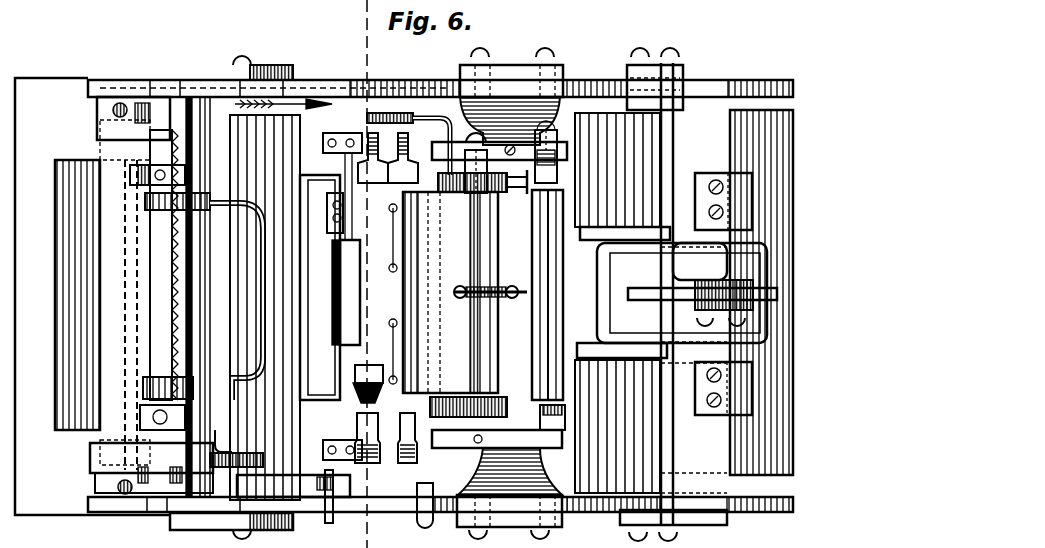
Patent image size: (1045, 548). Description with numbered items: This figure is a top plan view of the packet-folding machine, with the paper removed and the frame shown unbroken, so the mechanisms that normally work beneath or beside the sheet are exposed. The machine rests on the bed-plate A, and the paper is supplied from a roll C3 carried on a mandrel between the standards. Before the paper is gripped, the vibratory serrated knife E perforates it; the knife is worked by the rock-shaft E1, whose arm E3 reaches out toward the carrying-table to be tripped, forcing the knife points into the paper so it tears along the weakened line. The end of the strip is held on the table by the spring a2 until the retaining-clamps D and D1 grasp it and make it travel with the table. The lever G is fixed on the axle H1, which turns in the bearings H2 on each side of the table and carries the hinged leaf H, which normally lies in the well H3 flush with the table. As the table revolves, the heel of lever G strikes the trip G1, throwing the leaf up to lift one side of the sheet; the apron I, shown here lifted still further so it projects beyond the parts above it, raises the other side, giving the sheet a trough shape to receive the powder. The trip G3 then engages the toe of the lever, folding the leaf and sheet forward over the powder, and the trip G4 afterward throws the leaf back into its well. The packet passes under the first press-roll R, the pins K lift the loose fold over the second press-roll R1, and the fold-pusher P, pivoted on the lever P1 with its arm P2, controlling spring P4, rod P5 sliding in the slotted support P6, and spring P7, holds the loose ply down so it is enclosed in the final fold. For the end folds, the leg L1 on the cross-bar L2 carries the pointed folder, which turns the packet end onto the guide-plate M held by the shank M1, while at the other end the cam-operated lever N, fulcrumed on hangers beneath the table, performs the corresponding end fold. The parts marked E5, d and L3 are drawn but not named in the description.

The bed-plate A is at (404, 297).
The roll of paper strip C3 is at (57, 375).
The vibratory serrated knife E is at (170, 293).
The rock-shaft E1 is at (177, 265).
The arm of rock-shaft E3 is at (216, 432).
The lower bar E5 is at (258, 458).
The spring a2 is at (162, 377).
The hinged leaf H is at (326, 292).
The axle H1 is at (328, 209).
The bearings H2 is at (316, 452).
The well H3 is at (303, 236).
The bar d is at (341, 305).
The pins K is at (393, 214).
The cam-operated lever N is at (374, 354).
The apron I is at (405, 294).
The retaining-clamp D is at (385, 268).
The retaining-clamp D1 is at (386, 438).
The fold-pusher P is at (482, 365).
The lever P1 is at (499, 261).
The arm P2 is at (575, 104).
The controlling spring P4 is at (548, 417).
The rod P5 is at (512, 285).
The slotted support P6 is at (510, 327).
The spring P7 is at (475, 288).
The first press-roll R is at (546, 152).
The second press-roll R1 is at (563, 290).
The guide-plate M is at (582, 232).
The shank M1 is at (660, 290).
The leg L1 is at (723, 201).
The cross-bar L2 is at (673, 302).
The terminal block L3 is at (723, 388).
The lever G is at (315, 483).
The trip G1 is at (329, 515).
The trip G3 is at (408, 511).
The trip G4 is at (428, 527).